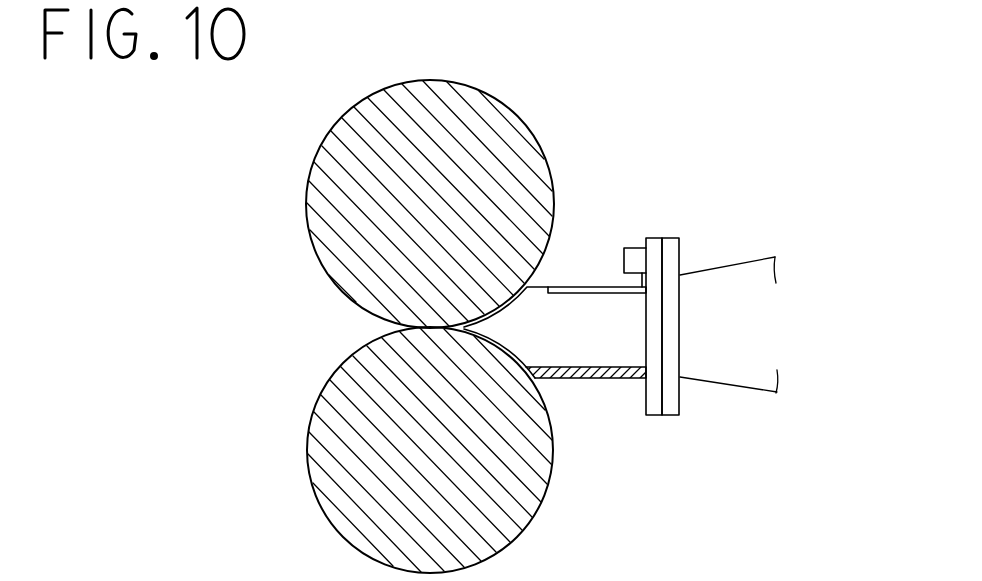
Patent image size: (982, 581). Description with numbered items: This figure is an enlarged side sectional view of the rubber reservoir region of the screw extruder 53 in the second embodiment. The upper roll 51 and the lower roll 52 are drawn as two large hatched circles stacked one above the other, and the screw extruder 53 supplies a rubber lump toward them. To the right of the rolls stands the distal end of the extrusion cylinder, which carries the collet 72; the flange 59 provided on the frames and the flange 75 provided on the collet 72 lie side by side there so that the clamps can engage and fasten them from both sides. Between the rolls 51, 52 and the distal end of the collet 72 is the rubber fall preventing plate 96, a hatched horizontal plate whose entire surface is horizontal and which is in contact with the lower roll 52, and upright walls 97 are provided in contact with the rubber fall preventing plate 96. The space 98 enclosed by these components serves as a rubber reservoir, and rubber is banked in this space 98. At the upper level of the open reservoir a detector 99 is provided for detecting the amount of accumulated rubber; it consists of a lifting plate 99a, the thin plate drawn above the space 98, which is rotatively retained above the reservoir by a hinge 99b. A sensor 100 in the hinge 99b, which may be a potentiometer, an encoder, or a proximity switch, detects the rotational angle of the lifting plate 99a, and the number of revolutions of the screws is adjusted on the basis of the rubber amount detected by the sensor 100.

The upper roll 51 is at (522, 135).
The lower roll 52 is at (527, 520).
The screw extruder 53 is at (745, 410).
The flange 59 is at (653, 415).
The collet 72 is at (680, 274).
The flange 75 is at (672, 415).
The rubber fall preventing plate 96 is at (592, 379).
The upright wall 97 is at (612, 332).
The space 98 is at (558, 390).
The detector 99 is at (596, 280).
The lifting plate 99a is at (573, 286).
The hinge 99b is at (646, 292).
The sensor 100 is at (633, 253).